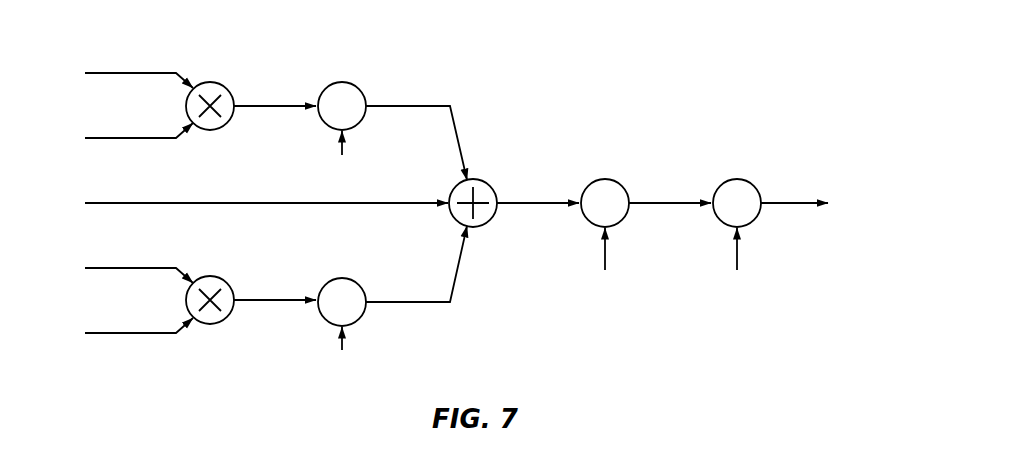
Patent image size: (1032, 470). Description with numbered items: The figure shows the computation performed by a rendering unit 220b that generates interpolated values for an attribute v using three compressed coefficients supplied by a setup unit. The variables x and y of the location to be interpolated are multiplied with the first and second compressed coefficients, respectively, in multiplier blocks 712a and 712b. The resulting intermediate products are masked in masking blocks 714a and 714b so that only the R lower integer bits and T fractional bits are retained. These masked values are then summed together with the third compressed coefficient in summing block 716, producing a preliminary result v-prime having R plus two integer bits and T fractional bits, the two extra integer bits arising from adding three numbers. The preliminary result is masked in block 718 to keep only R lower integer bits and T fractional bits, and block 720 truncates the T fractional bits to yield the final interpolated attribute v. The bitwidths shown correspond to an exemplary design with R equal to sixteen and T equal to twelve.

The rendering unit 220b is at (781, 72).
The multiplier block 712a is at (204, 82).
The multiplier block 712b is at (204, 277).
The masking block 714a is at (336, 82).
The masking block 714b is at (336, 278).
The summing block 716 is at (476, 180).
The masking block 718 is at (599, 180).
The truncation block 720 is at (731, 180).